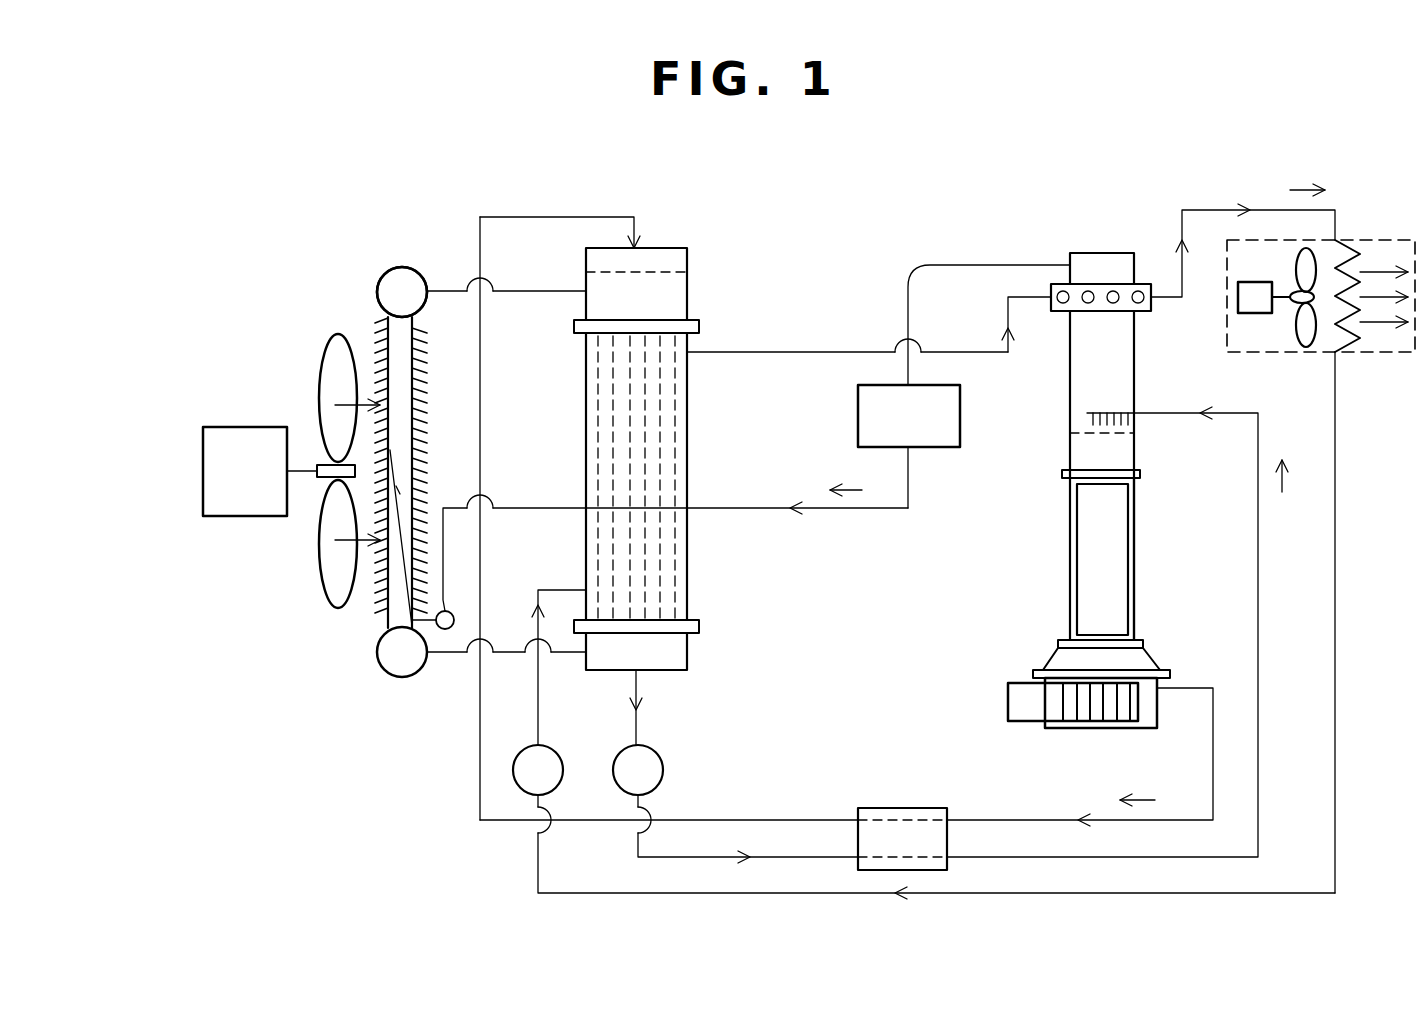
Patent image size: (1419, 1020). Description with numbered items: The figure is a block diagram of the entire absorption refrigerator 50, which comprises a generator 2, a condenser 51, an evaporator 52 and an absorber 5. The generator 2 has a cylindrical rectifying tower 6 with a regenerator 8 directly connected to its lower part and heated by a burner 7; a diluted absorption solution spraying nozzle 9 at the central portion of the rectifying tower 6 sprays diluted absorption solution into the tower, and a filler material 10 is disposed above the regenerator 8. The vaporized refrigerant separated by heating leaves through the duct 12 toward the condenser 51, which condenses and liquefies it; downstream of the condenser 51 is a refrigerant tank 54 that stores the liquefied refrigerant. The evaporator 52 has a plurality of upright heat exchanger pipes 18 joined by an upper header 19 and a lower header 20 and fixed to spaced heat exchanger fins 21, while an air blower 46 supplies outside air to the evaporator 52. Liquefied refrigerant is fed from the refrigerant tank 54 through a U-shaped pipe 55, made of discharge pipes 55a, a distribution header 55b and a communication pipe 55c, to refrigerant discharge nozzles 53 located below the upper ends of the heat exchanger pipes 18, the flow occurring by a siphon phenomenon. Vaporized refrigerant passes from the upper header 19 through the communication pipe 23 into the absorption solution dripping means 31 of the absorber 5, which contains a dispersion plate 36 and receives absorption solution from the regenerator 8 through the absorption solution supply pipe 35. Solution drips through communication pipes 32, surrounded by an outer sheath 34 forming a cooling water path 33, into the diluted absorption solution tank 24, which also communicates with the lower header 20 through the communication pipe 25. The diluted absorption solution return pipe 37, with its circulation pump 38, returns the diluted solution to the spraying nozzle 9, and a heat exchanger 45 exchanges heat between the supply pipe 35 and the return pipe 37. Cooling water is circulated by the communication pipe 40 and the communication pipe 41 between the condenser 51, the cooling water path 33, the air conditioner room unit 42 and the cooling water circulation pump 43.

The generator 2 is at (1137, 522).
The absorber 5 is at (700, 325).
The rectifying tower 6 is at (1135, 378).
The burner 7 is at (1022, 722).
The regenerator 8 is at (1098, 728).
The diluted absorption solution spraying nozzle 9 is at (1104, 412).
The filler material 10 is at (1120, 566).
The duct 12 is at (970, 265).
The heat exchanger pipes 18 is at (388, 620).
The upper header 19 is at (378, 284).
The lower header 20 is at (380, 670).
The heat exchanger fins 21 is at (420, 405).
The communication pipe 23 is at (537, 291).
The diluted absorption solution tank 24 is at (690, 655).
The communication pipe 25 is at (512, 652).
The absorption solution dripping means 31 is at (662, 248).
The communication pipes 32 is at (598, 408).
The cooling water path 33 is at (680, 496).
The outer sheath 34 is at (690, 570).
The absorption solution supply pipe 35 is at (790, 820).
The dispersion plate 36 is at (672, 272).
The diluted absorption solution return pipe 37 is at (1025, 857).
The diluted absorption solution circulation pump 38 is at (660, 750).
The communication pipe 40 is at (1000, 355).
The communication pipe 41 is at (1340, 438).
The air conditioner room unit 42 is at (1370, 240).
The cooling water circulation pump 43 is at (560, 750).
The heat exchanger 45 is at (936, 808).
The air blower 46 is at (330, 590).
The absorption refrigerator 50 is at (1035, 253).
The condenser 51 is at (1150, 311).
The evaporator 52 is at (406, 268).
The refrigerant discharge nozzles 53 is at (392, 447).
The refrigerant tank 54 is at (948, 447).
The U-shaped pipe 55 is at (832, 510).
The discharge pipes 55a is at (397, 490).
The distribution header 55b is at (445, 630).
The communication pipe 55c is at (570, 508).